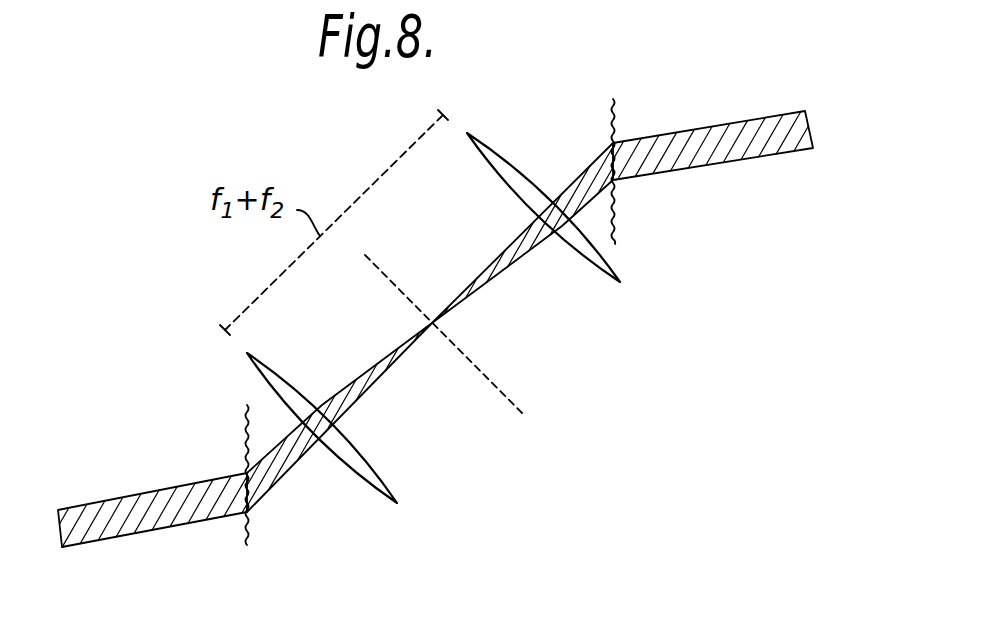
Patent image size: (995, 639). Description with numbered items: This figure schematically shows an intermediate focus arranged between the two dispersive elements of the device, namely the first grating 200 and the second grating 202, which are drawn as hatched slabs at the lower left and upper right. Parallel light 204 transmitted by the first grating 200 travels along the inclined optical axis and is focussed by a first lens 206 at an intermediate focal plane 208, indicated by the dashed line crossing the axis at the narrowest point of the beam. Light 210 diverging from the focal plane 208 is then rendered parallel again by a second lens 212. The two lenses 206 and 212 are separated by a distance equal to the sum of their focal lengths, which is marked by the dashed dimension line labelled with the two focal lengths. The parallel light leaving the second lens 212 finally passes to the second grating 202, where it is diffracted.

The first grating 200 is at (247, 545).
The second grating 202 is at (615, 234).
The parallel light 204 is at (288, 473).
The first lens 206 is at (388, 483).
The intermediate focal plane 208 is at (508, 398).
The light 210 is at (502, 273).
The second lens 212 is at (622, 271).